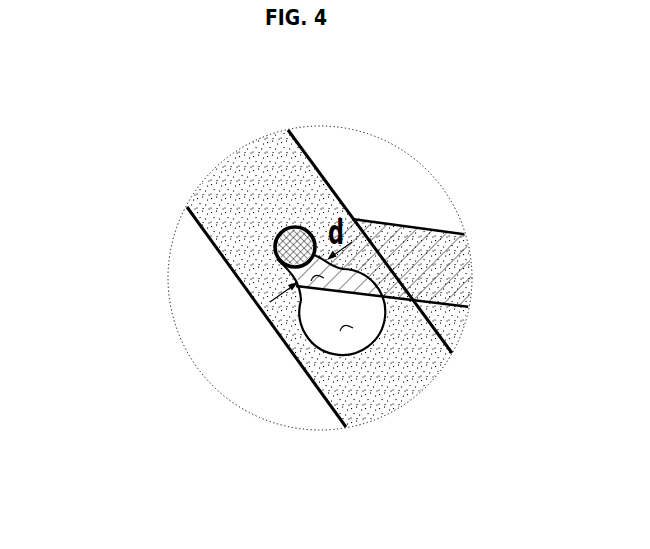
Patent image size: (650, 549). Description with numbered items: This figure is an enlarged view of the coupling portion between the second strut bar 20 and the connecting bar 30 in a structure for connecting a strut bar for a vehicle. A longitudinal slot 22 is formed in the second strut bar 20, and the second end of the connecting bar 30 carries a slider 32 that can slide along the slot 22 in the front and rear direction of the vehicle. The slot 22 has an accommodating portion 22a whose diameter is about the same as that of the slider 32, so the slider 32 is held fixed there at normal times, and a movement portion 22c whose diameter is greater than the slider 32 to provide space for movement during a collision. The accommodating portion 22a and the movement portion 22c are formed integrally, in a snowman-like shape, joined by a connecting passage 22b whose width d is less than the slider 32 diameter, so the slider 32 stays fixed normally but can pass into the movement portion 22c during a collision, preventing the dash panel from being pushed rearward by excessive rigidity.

The second strut bar 20 is at (244, 191).
The slot 22 is at (297, 308).
The accommodating portion 22a is at (278, 258).
The connecting passage 22b is at (315, 278).
The movement portion 22c is at (345, 330).
The connecting bar 30 is at (417, 247).
The slider 32 is at (297, 242).